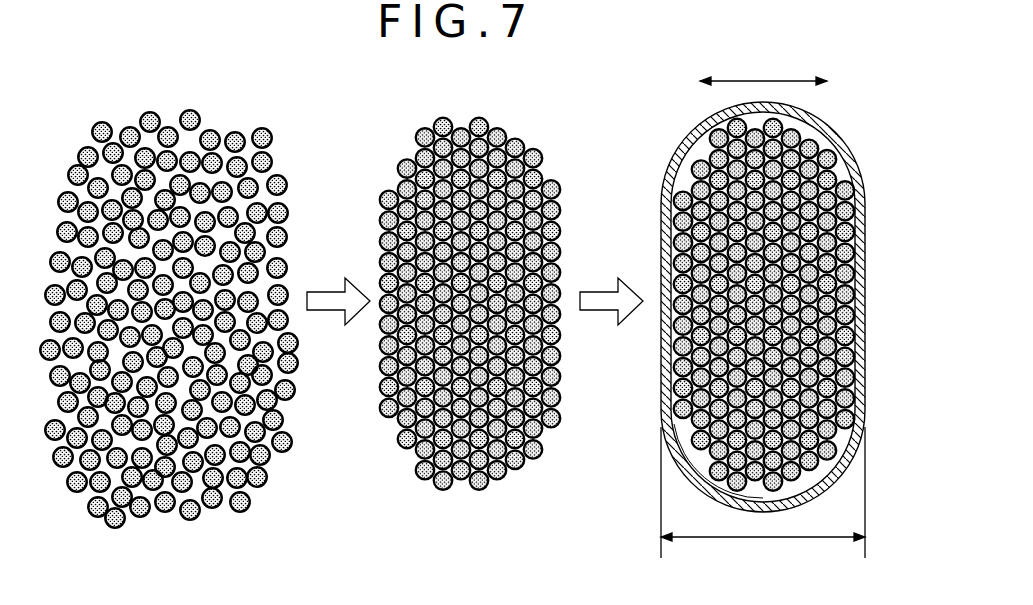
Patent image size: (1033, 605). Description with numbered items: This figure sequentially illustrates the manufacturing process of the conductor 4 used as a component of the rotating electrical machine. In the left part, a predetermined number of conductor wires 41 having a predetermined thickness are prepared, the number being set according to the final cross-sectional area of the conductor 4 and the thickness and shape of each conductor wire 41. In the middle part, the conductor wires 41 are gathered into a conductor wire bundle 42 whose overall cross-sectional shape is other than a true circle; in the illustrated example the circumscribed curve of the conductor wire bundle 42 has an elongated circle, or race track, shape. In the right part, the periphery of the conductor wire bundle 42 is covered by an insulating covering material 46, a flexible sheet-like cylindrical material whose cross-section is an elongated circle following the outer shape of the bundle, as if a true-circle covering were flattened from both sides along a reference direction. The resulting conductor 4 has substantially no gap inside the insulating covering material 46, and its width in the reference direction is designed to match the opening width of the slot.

The conductor 4 is at (735, 311).
The conductor wire 41 is at (452, 320).
The conductor wire bundle 42 is at (378, 540).
The insulating covering material 46 is at (661, 203).